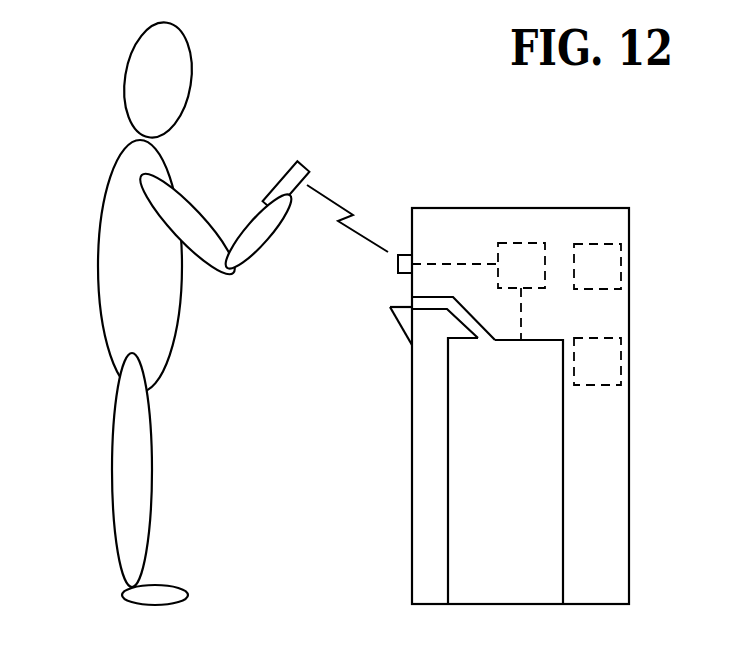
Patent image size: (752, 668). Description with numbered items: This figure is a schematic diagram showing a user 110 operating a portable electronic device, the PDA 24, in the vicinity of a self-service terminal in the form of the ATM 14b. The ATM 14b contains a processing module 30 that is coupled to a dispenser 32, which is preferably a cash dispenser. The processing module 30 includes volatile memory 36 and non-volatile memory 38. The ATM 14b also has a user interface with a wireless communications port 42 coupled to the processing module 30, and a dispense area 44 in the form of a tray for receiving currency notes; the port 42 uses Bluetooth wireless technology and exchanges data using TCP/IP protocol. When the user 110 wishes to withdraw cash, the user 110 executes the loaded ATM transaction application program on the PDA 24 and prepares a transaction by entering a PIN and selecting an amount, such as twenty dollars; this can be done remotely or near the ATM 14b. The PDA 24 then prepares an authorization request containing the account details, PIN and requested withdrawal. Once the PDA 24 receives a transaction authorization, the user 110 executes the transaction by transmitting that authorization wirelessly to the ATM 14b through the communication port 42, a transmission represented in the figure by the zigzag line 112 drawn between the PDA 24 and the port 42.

The user 110 is at (132, 60).
The PDA 24 is at (287, 172).
The zigzag line 112 is at (333, 202).
The wireless communications port 42 is at (397, 271).
The dispense area 44 is at (399, 317).
The ATM 14b is at (629, 445).
The dispenser 32 is at (550, 507).
The processing module 30 is at (520, 243).
The volatile memory 36 is at (595, 244).
The non-volatile memory 38 is at (612, 337).